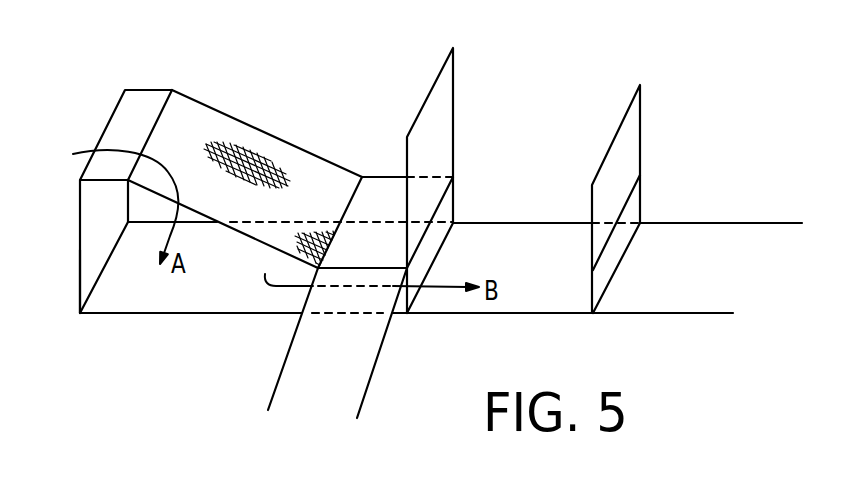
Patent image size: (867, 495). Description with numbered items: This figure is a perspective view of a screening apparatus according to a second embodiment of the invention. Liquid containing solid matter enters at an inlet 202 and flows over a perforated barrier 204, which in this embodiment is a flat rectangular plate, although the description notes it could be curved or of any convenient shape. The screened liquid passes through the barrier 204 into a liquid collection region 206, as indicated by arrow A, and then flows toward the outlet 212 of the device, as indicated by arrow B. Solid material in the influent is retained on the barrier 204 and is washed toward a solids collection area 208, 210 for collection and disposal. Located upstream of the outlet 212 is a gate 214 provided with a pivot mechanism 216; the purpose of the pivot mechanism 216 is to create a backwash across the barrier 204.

The inlet 202 is at (115, 118).
The perforated barrier 204 is at (245, 128).
The liquid collection region 206 is at (117, 295).
The solids collection area 208 is at (380, 183).
The solids collection area 210 is at (355, 383).
The outlet 212 is at (694, 297).
The gate 214 is at (635, 138).
The pivot mechanism 216 is at (635, 208).